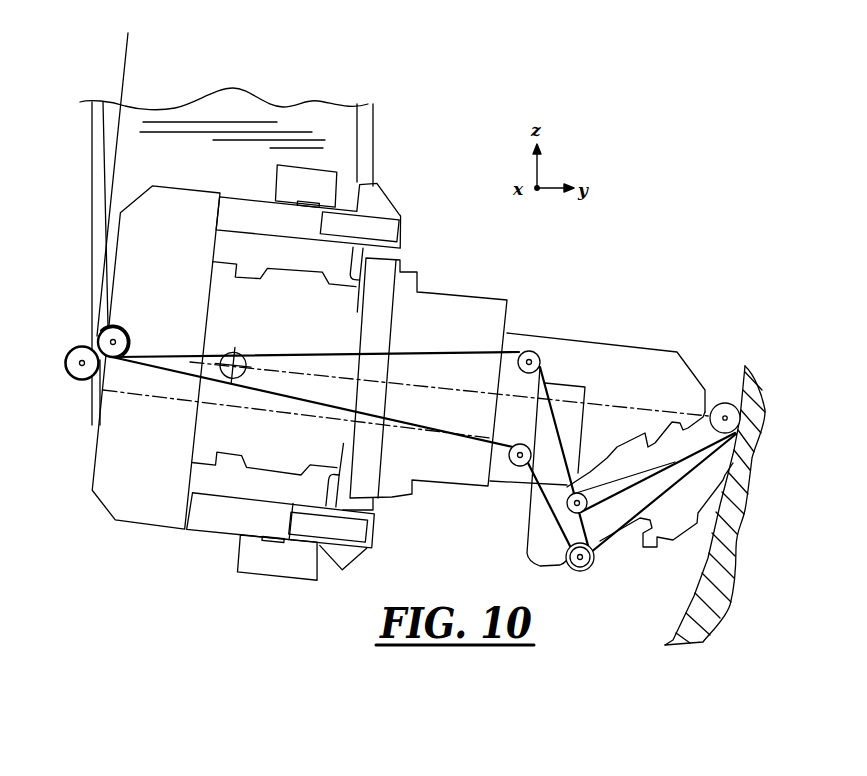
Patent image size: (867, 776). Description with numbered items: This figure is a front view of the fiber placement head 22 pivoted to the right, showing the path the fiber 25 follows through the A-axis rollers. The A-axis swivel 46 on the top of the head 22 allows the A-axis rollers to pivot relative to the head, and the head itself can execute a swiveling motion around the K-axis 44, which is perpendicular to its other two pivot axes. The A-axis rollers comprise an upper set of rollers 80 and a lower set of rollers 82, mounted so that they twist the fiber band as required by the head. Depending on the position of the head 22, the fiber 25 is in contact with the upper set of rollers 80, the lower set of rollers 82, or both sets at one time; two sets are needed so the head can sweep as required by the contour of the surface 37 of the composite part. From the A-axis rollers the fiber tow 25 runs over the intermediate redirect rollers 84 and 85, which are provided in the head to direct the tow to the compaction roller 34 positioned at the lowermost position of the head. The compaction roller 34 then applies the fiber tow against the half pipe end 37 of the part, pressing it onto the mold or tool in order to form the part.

The head 22 is at (372, 228).
The fiber 25 is at (126, 57).
The compaction roller 34 is at (731, 402).
The half pipe end 37 is at (691, 606).
The K-axis 44 is at (367, 317).
The A-axis swivel 46 is at (197, 424).
The upper set of rollers 80 is at (70, 380).
The lower set of rollers 82 is at (123, 330).
The intermediate redirect roller 84 is at (512, 448).
The intermediate redirect roller 85 is at (569, 554).